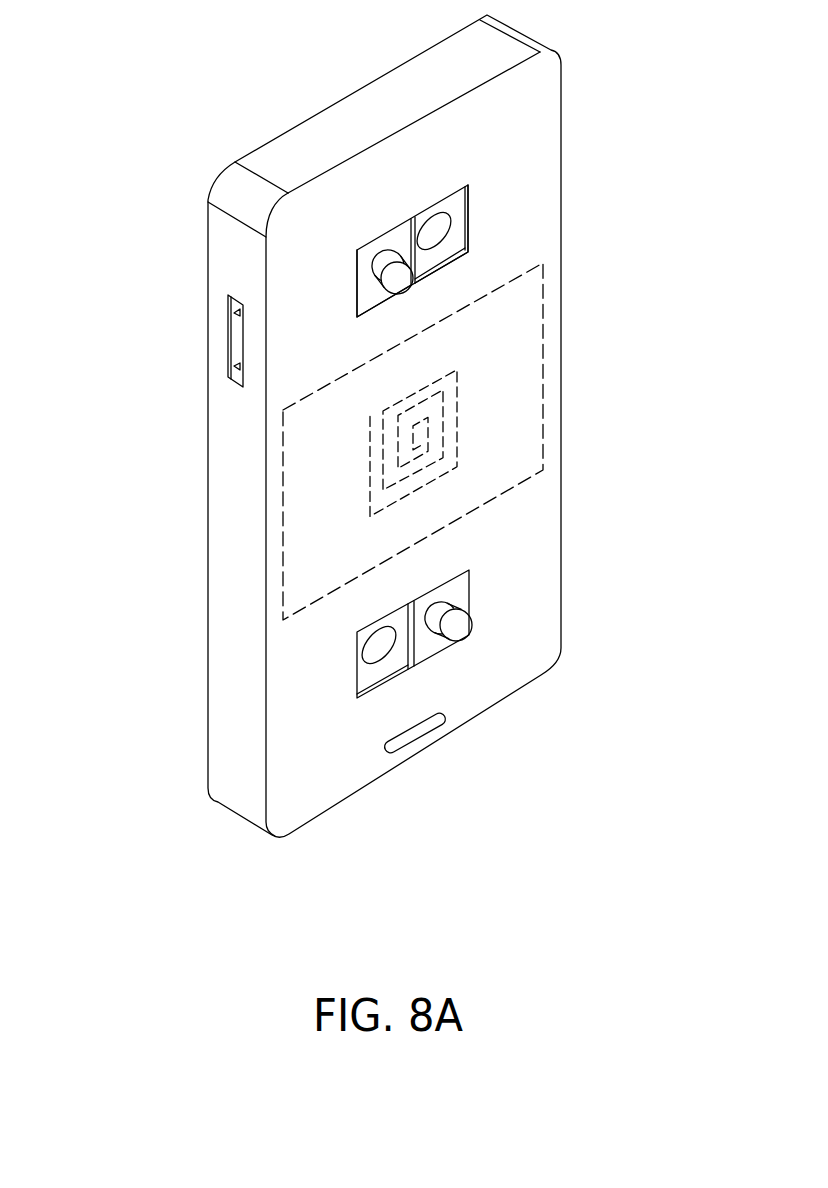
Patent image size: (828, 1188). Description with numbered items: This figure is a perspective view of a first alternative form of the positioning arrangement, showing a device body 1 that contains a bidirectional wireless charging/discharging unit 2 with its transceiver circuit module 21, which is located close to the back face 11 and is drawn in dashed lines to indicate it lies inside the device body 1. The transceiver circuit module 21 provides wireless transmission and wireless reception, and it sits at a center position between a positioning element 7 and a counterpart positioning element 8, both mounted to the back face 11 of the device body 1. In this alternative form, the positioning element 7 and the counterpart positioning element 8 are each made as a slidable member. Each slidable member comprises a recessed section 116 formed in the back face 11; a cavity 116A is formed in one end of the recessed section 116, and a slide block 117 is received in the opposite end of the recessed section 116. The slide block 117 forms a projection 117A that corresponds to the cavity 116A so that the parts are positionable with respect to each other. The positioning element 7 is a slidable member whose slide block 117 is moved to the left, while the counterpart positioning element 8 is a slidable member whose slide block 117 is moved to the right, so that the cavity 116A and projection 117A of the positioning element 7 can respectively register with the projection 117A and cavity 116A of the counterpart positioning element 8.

The device body 1 is at (207, 726).
The bidirectional wireless charging/discharging unit 2 is at (548, 310).
The transceiver circuit module 21 is at (462, 407).
The back face 11 is at (527, 518).
The positioning element 7 is at (478, 622).
The counterpart positioning element 8 is at (427, 200).
The recessed section 116 is at (457, 241).
The cavity 116A is at (426, 242).
The slide block 117 is at (398, 238).
The projection 117A is at (390, 277).